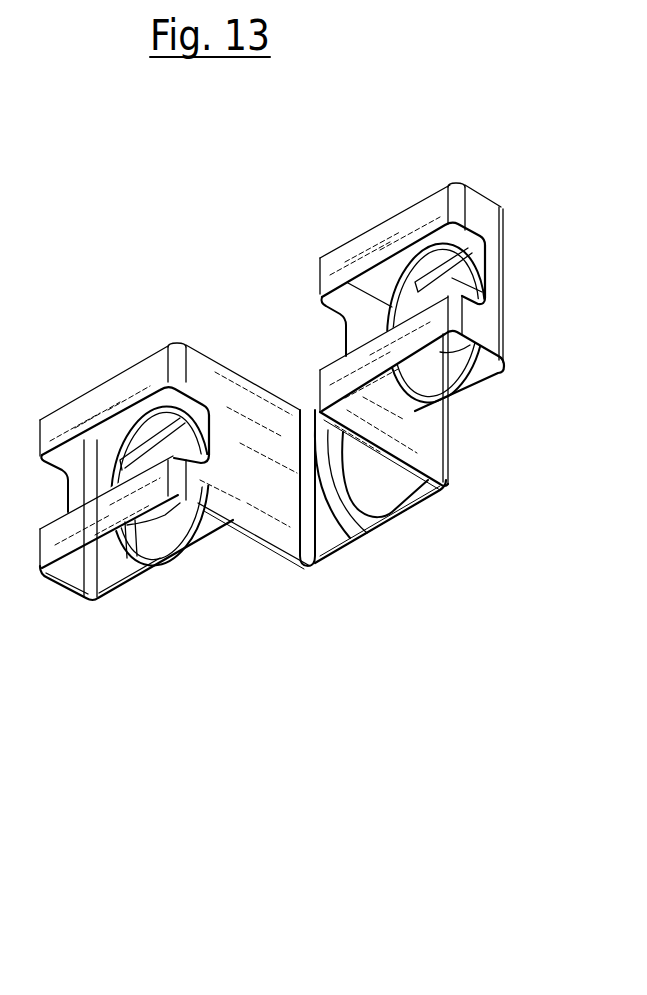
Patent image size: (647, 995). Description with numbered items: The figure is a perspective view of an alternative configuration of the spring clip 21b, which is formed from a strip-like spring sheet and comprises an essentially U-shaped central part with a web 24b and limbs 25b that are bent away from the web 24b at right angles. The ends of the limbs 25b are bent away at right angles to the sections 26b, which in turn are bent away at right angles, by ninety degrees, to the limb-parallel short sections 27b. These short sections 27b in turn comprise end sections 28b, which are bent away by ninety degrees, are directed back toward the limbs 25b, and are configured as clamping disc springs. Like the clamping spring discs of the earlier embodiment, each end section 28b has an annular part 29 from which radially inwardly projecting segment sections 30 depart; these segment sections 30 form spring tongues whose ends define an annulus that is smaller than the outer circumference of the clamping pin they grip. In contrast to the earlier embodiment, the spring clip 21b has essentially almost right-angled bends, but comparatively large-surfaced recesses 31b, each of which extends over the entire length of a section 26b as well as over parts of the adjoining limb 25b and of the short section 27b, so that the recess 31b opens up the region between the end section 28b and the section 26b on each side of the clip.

The spring clip 21b is at (247, 284).
The web 24b is at (435, 492).
The limb 25b is at (253, 517).
The section 26b is at (385, 225).
The limb-parallel short section 27b is at (495, 213).
The end section 28b is at (105, 583).
The annular part 29 is at (467, 393).
The segment section 30 is at (153, 538).
The recess 31b is at (107, 427).